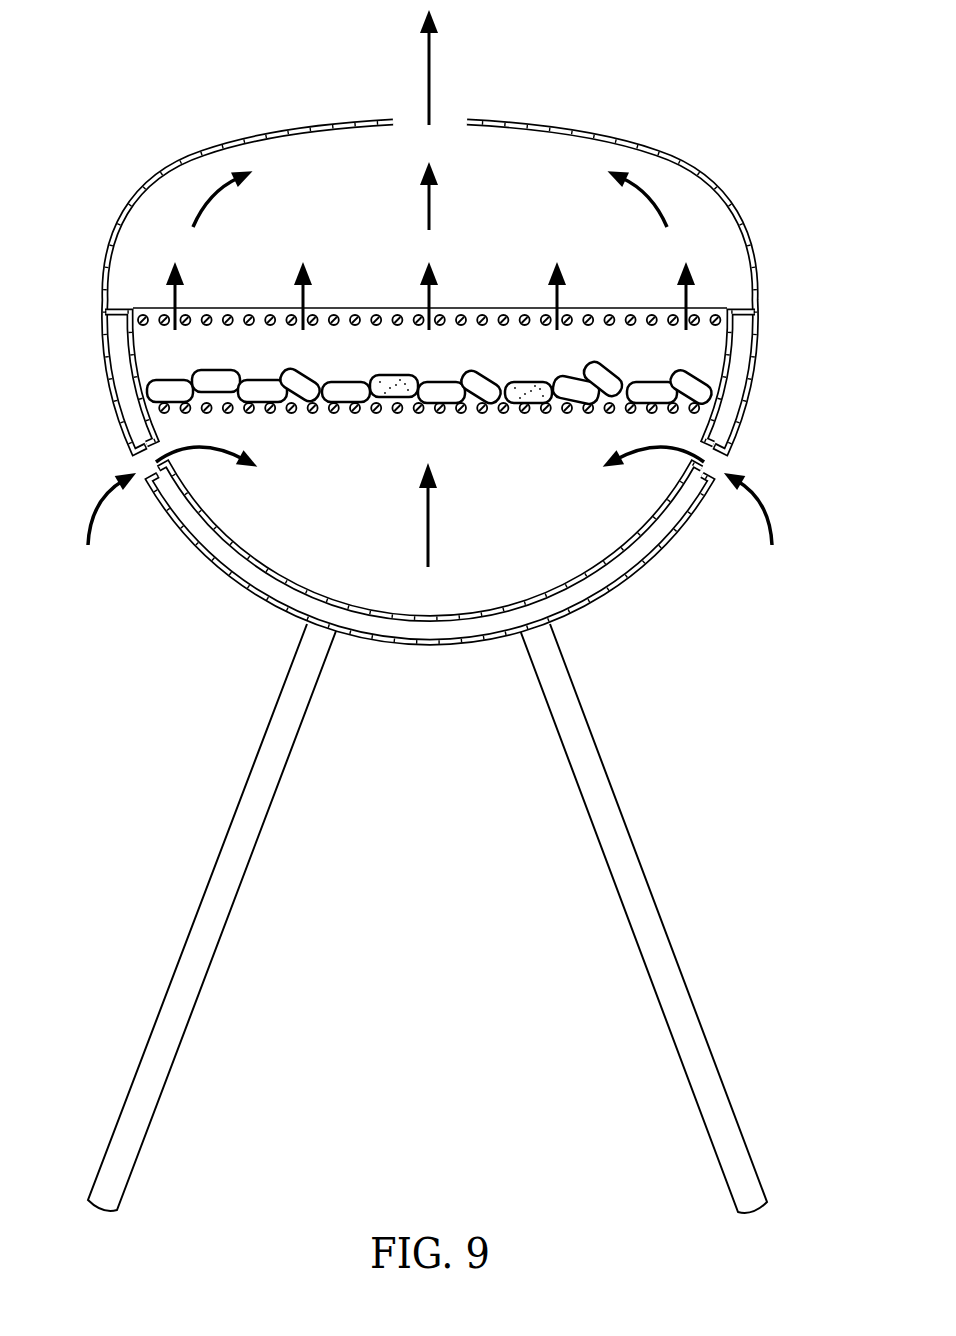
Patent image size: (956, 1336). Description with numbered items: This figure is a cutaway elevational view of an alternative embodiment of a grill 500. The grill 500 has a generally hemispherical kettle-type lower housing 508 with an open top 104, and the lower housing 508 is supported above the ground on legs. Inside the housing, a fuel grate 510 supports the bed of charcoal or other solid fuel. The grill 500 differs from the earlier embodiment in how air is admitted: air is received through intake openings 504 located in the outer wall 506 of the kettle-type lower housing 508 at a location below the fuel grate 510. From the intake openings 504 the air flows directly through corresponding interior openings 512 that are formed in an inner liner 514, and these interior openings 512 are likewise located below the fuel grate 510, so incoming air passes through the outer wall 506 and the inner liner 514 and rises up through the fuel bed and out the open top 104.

The grill 500 is at (722, 54).
The open top 104 is at (133, 242).
The kettle-type lower housing 508 is at (758, 371).
The intake openings 504 is at (120, 463).
The interior openings 512 is at (188, 468).
The fuel grate 510 is at (460, 413).
The inner liner 514 is at (333, 600).
The outer wall 506 is at (680, 548).